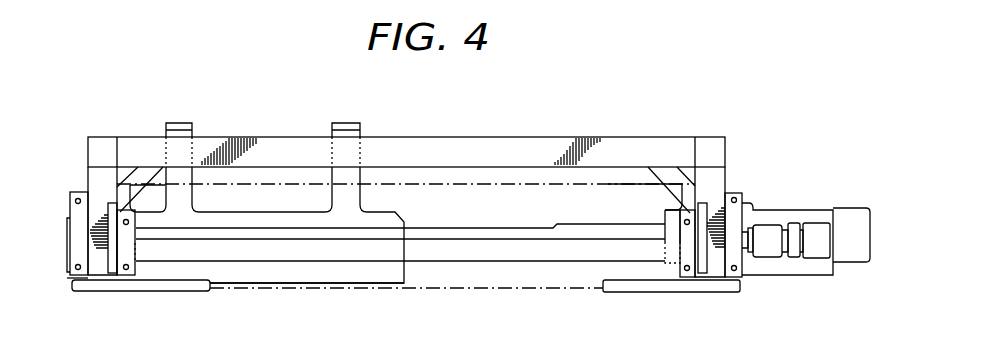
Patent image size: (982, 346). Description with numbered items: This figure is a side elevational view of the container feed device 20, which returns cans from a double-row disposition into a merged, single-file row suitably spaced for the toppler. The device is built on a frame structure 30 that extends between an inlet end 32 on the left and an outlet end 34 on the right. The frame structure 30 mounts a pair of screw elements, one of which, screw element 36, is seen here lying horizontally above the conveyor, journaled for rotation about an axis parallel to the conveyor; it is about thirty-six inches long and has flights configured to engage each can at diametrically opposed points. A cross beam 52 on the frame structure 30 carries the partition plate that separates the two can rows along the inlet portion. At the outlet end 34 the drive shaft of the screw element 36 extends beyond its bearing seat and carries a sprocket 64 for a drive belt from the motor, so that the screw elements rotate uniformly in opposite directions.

The container feed device 20 is at (549, 112).
The frame structure 30 is at (457, 137).
The inlet end 32 is at (62, 235).
The outlet end 34 is at (784, 193).
The screw element 36 is at (505, 278).
The cross beam 52 is at (194, 124).
The sprocket 64 is at (768, 252).